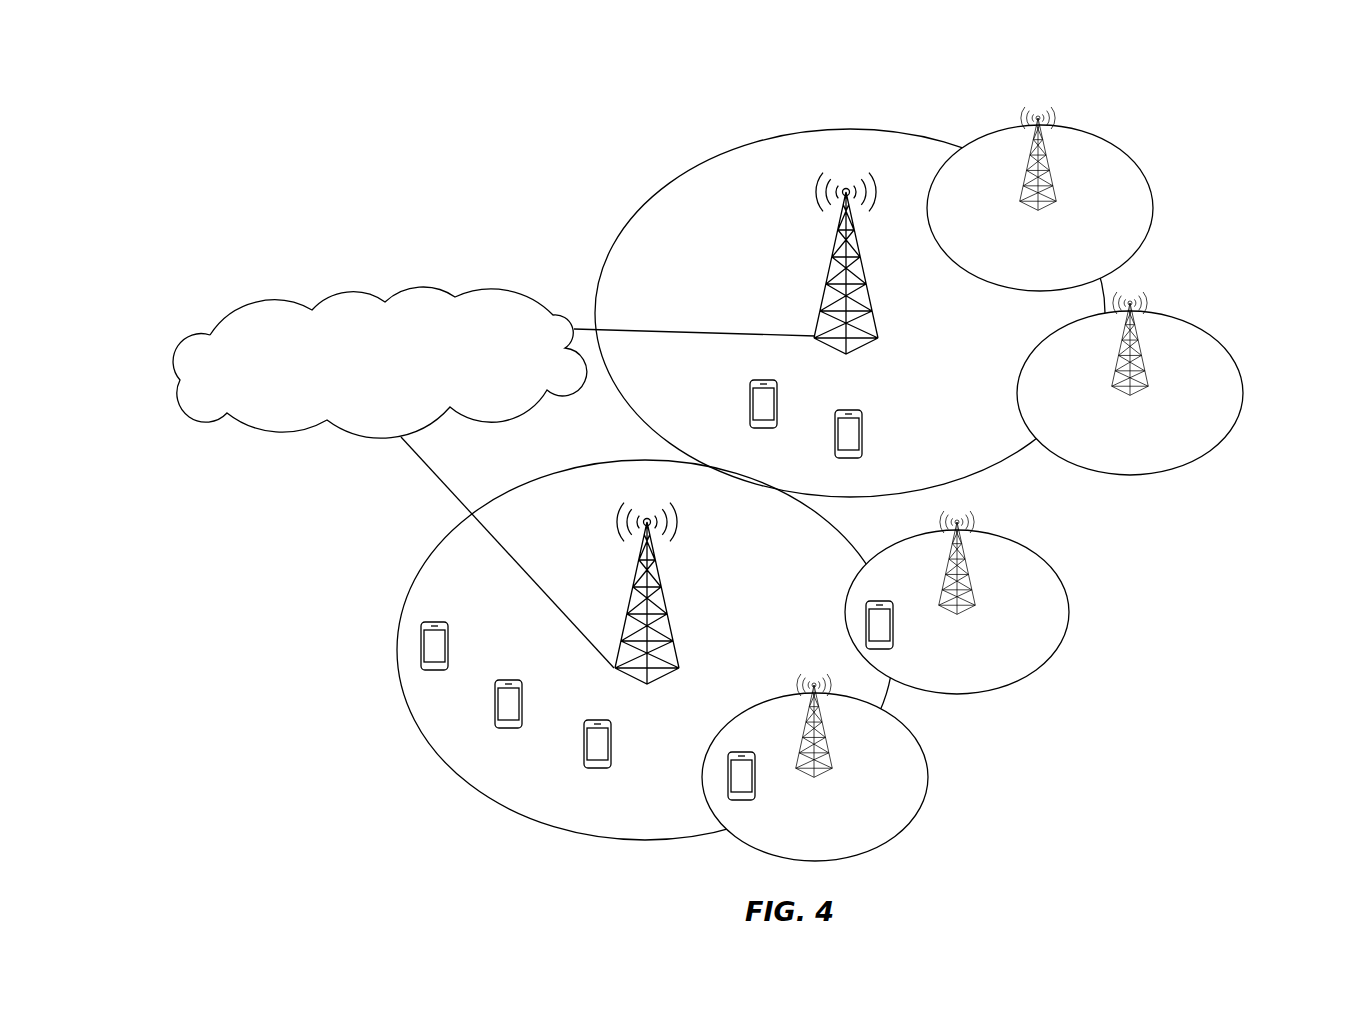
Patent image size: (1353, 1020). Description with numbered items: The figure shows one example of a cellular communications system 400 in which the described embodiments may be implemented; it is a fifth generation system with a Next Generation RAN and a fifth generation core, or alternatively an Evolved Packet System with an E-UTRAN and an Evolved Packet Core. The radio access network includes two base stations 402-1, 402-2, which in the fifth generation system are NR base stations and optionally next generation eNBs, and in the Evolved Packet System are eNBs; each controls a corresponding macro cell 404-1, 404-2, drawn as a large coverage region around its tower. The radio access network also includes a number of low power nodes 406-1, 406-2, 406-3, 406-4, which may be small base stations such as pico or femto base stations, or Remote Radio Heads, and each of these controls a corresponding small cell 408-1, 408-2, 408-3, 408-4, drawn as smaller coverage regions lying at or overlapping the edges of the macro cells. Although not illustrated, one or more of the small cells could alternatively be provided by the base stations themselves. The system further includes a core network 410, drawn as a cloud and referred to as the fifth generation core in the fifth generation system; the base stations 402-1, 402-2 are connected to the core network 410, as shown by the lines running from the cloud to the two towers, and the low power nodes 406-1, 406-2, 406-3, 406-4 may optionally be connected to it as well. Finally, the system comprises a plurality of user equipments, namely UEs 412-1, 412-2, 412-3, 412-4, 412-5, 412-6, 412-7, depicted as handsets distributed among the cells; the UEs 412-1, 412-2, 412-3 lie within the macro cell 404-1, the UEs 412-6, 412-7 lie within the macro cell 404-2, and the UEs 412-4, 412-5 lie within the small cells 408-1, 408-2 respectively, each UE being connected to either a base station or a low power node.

The cellular communications system 400 is at (1221, 93).
The base station 402-1 is at (667, 618).
The base station 402-2 is at (832, 283).
The macro cell 404-1 is at (510, 809).
The macro cell 404-2 is at (848, 130).
The low power node 406-1 is at (825, 777).
The low power node 406-2 is at (973, 605).
The low power node 406-3 is at (1137, 390).
The low power node 406-4 is at (1047, 203).
The small cell 408-1 is at (931, 777).
The small cell 408-2 is at (1073, 623).
The small cell 408-3 is at (1245, 399).
The small cell 408-4 is at (1152, 198).
The core network 410 is at (380, 362).
The UE 412-1 is at (612, 752).
The UE 412-2 is at (523, 699).
The UE 412-3 is at (449, 644).
The UE 412-4 is at (757, 784).
The UE 412-5 is at (893, 629).
The UE 412-6 is at (778, 408).
The UE 412-7 is at (863, 437).